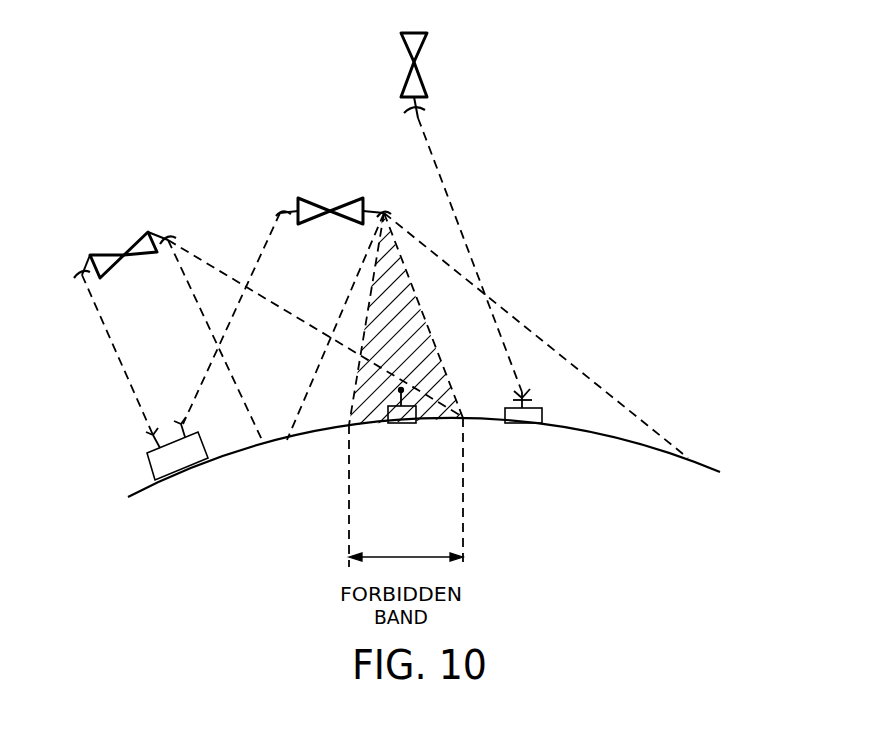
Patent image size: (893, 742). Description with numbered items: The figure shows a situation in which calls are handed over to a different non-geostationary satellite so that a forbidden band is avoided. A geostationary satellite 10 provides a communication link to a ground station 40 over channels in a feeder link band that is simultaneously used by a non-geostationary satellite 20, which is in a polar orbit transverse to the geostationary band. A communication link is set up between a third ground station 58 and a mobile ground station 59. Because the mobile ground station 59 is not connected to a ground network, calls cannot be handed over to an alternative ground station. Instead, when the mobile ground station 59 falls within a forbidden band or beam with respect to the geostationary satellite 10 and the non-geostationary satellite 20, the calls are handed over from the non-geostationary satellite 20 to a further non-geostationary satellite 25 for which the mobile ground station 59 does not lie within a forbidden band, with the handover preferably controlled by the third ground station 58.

The geostationary satellite 10 is at (423, 78).
The non-geostationary satellite 20 is at (330, 210).
The further non-geostationary satellite 25 is at (108, 255).
The ground station 40 is at (522, 418).
The third ground station 58 is at (182, 457).
The mobile ground station 59 is at (402, 410).